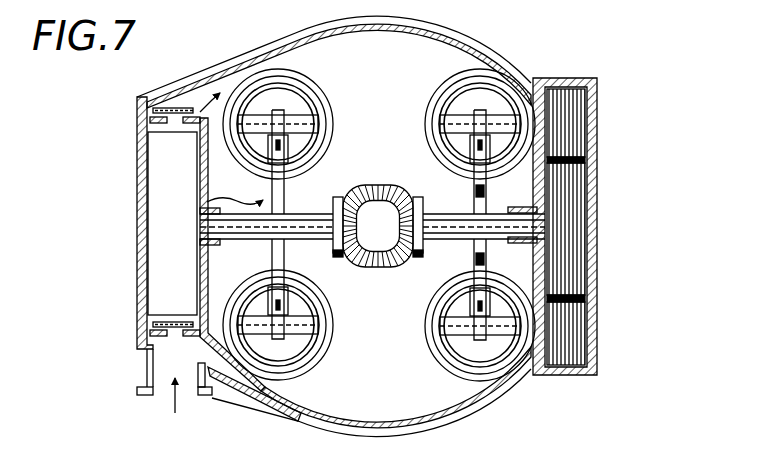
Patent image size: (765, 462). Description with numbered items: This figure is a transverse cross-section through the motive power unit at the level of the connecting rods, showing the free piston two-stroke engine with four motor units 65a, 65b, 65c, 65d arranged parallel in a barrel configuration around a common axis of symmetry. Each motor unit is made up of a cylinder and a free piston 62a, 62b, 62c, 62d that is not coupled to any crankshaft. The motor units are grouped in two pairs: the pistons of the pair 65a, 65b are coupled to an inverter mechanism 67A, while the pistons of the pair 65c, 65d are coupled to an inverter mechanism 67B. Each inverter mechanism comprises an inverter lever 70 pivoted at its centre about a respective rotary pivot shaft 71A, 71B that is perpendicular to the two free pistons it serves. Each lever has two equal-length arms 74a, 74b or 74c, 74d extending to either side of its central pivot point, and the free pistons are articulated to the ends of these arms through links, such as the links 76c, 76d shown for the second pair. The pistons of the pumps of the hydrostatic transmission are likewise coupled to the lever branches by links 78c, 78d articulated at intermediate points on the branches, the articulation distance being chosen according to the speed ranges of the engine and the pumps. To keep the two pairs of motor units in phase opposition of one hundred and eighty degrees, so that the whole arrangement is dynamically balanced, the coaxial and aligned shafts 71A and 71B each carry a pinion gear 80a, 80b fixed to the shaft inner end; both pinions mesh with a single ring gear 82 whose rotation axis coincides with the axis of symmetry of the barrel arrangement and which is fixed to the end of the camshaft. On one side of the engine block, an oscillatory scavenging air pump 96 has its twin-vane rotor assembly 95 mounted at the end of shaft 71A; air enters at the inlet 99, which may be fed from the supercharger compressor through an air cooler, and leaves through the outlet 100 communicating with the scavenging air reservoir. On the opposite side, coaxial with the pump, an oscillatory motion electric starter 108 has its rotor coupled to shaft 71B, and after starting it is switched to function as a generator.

The free piston 62a is at (295, 95).
The free piston 62b is at (300, 305).
The free piston 62c is at (508, 92).
The free piston 62d is at (440, 315).
The motor unit 65a is at (333, 107).
The motor unit 65b is at (322, 353).
The motor unit 65c is at (447, 80).
The motor unit 65d is at (448, 380).
The inverter mechanism 67A is at (295, 205).
The inverter mechanism 67B is at (457, 203).
The inverter lever 70 is at (207, 202).
The rotary pivot shaft 71A is at (317, 220).
The rotary pivot shaft 71B is at (437, 220).
The lever arm 74a is at (320, 152).
The lever arm 74b is at (287, 282).
The lever arm 74c is at (440, 147).
The lever arm 74d is at (473, 255).
The link 76c is at (440, 103).
The link 76d is at (447, 360).
The link 78c is at (487, 190).
The link 78d is at (487, 258).
The pinion gear 80a is at (338, 257).
The pinion gear 80b is at (415, 257).
The ring gear 82 is at (373, 267).
The twin-vane rotor assembly 95 is at (165, 253).
The oscillatory scavenging air pump 96 is at (172, 182).
The inlet 99 is at (167, 365).
The outlet 100 is at (193, 88).
The oscillatory motion electric starter 108 is at (600, 128).